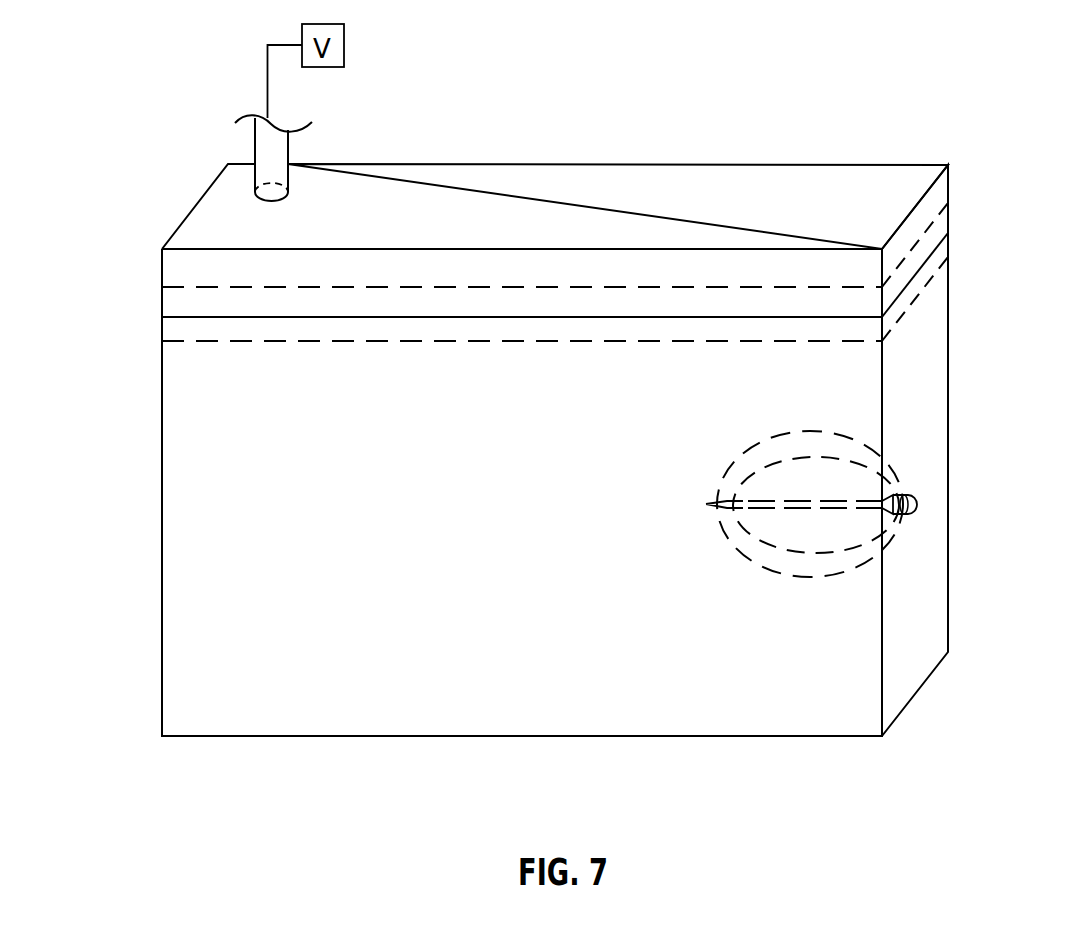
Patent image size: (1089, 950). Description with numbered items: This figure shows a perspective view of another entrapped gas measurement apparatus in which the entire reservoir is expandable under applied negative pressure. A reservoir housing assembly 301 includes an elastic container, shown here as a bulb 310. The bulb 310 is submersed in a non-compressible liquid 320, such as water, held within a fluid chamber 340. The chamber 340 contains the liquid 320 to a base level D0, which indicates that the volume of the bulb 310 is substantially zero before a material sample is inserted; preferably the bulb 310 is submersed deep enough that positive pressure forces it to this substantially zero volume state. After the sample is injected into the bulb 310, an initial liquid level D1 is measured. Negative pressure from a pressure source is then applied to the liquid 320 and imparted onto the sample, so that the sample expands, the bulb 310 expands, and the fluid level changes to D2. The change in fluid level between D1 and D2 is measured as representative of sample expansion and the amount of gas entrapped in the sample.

The reservoir housing assembly 301 is at (564, 389).
The bulb 310 is at (833, 510).
The non-compressible liquid 320 is at (223, 502).
The fluid chamber 340 is at (950, 363).
The base level D0 is at (948, 257).
The initial liquid level D1 is at (948, 231).
The changed fluid level D2 is at (948, 202).